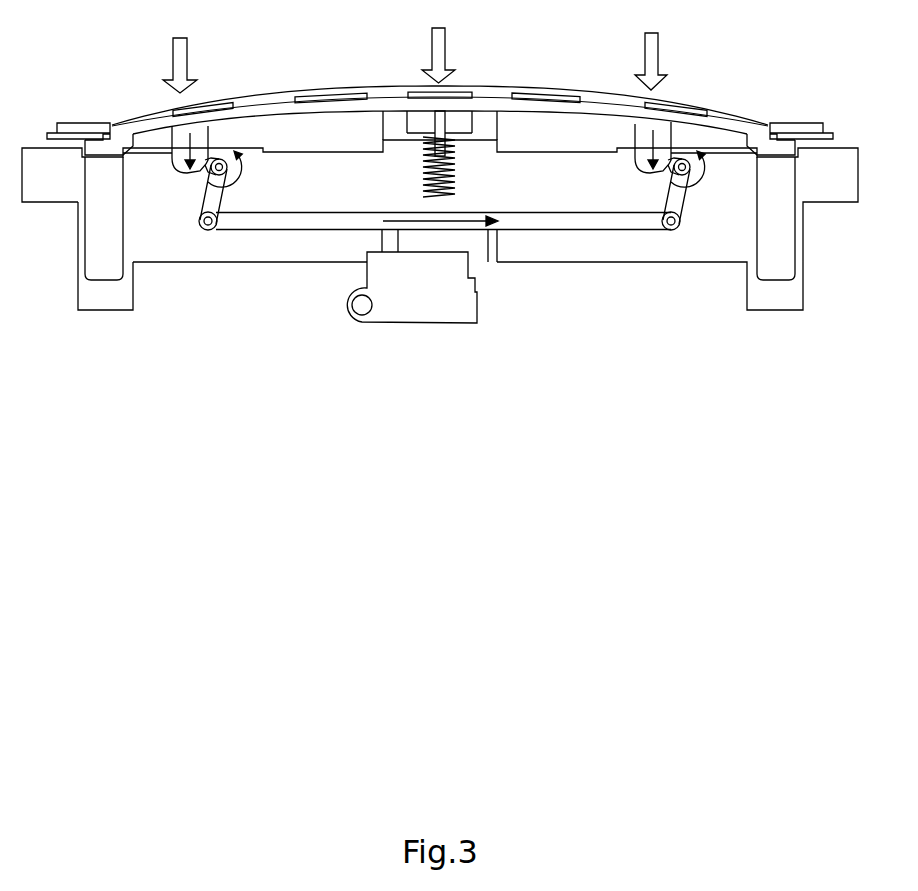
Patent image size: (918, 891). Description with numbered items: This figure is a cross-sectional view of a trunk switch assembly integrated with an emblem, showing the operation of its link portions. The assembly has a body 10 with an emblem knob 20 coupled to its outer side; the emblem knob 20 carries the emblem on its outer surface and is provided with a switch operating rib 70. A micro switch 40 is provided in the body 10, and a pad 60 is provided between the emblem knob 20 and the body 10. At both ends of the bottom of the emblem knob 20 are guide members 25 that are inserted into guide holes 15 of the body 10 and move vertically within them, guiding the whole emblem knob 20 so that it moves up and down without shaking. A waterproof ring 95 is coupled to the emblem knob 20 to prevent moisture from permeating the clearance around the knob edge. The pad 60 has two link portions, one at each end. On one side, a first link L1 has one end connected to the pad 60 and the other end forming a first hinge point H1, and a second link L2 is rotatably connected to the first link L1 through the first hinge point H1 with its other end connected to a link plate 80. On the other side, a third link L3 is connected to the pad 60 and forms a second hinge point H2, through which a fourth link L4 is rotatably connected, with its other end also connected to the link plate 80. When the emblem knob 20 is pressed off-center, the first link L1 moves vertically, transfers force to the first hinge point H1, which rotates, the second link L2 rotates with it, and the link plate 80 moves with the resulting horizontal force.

The body 10 is at (48, 195).
The guide hole 15 is at (103, 303).
The guide member 25 is at (97, 258).
The waterproof ring 95 is at (50, 135).
The emblem knob 20 is at (398, 90).
The pad 60 is at (147, 125).
The switch operating rib 70 is at (443, 127).
The micro switch 40 is at (423, 315).
The link plate 80 is at (298, 223).
The first link L1 is at (204, 157).
The second link L2 is at (207, 203).
The third link L3 is at (673, 150).
The fourth link L4 is at (680, 202).
The first hinge point H1 is at (220, 152).
The second hinge point H2 is at (702, 163).